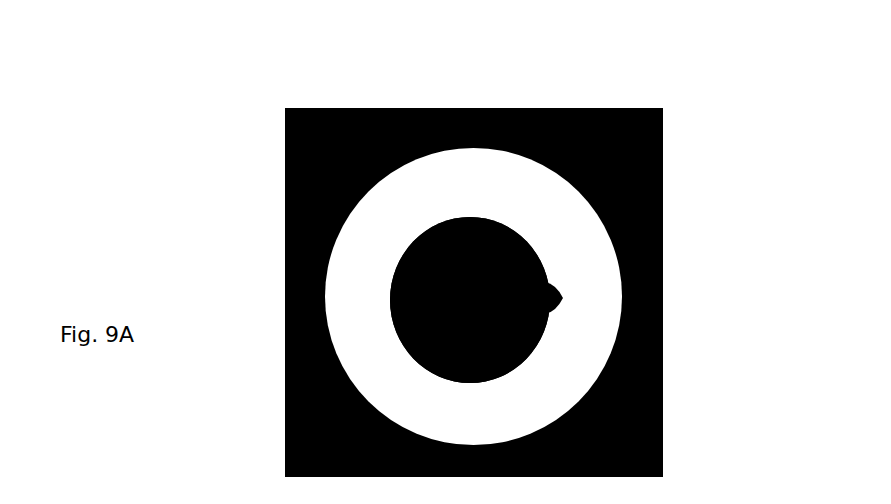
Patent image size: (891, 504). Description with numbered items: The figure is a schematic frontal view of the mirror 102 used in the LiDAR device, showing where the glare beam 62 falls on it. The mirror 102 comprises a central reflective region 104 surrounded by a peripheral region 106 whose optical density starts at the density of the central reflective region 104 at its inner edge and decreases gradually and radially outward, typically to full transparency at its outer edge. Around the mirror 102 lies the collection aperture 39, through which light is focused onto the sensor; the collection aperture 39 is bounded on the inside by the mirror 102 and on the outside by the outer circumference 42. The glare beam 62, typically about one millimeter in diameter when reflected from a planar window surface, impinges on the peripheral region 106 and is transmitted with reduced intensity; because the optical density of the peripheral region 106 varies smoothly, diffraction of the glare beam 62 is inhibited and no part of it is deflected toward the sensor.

The collection aperture 39 is at (451, 195).
The outer circumference 42 is at (608, 236).
The mirror 102 is at (503, 215).
The central reflective region 104 is at (495, 300).
The glare beam 62 is at (563, 298).
The peripheral region 106 is at (542, 338).